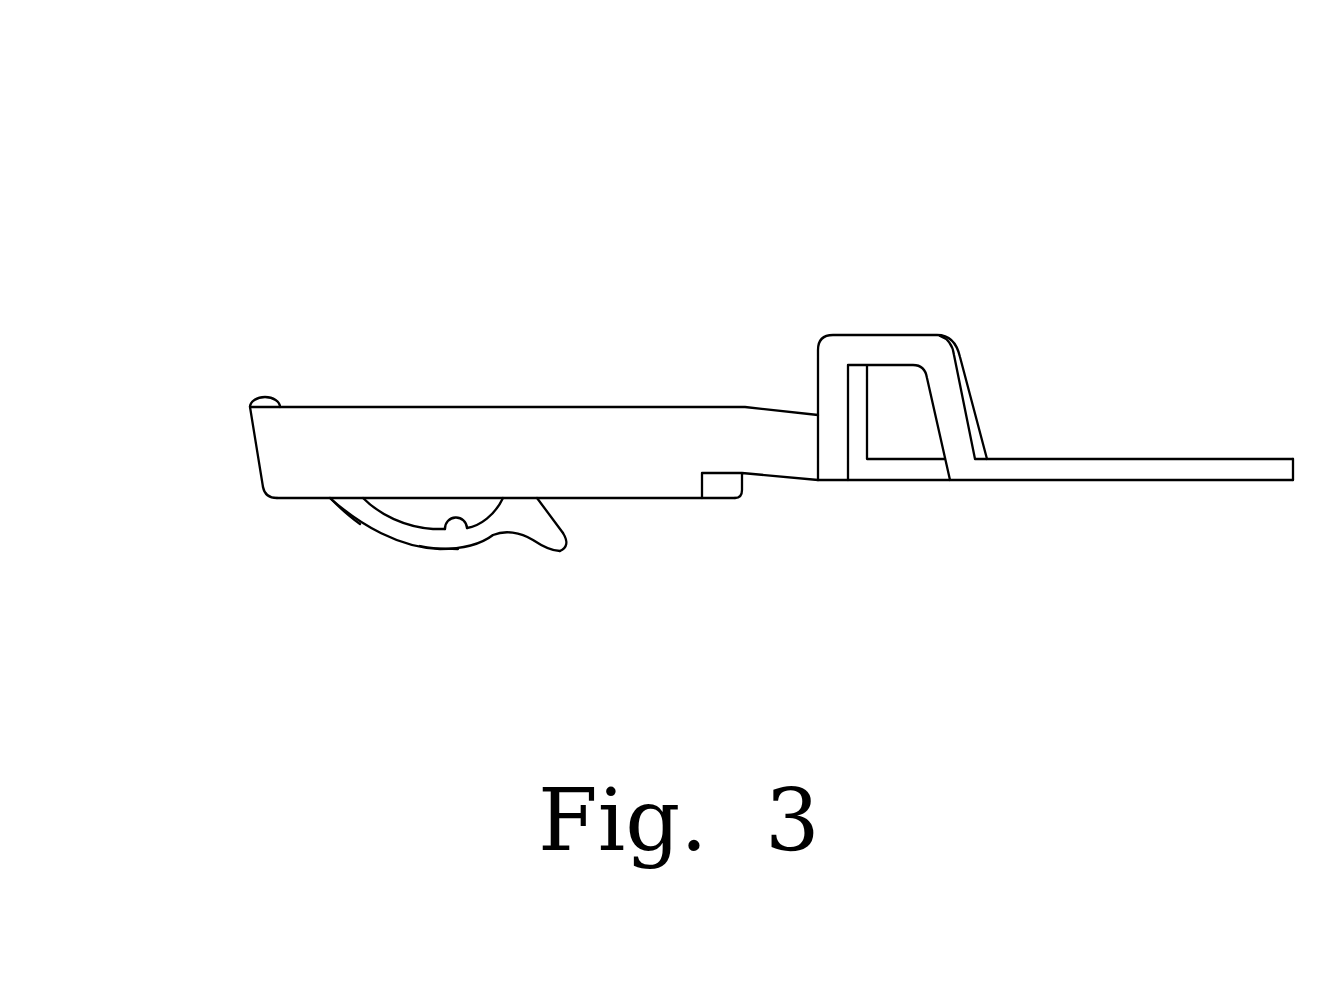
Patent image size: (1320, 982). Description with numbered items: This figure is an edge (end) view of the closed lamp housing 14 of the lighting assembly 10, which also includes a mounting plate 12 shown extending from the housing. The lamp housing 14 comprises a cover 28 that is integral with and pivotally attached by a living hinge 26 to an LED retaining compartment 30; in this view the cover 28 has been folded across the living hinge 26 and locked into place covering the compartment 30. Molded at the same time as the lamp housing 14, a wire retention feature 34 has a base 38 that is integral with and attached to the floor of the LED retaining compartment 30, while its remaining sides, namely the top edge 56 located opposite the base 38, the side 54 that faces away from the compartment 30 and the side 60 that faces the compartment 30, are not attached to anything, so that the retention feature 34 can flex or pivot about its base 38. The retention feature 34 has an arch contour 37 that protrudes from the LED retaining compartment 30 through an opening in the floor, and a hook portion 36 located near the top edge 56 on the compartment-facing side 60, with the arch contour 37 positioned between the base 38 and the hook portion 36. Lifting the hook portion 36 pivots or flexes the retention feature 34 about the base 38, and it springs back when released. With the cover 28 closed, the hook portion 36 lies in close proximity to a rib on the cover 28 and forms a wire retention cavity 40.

The lighting assembly 10 is at (1098, 203).
The mounting plate 12 is at (1207, 468).
The lamp housing 14 is at (657, 368).
The living hinge 26 is at (252, 400).
The cover 28 is at (290, 407).
The LED retaining compartment 30 is at (280, 498).
The wire retention feature 34 is at (415, 555).
The hook portion 36 is at (542, 524).
The arch contour 37 is at (393, 530).
The base 38 is at (328, 500).
The wire retention cavity 40 is at (465, 531).
The side 54 is at (445, 551).
The top edge 56 is at (557, 549).
The side 60 is at (400, 498).